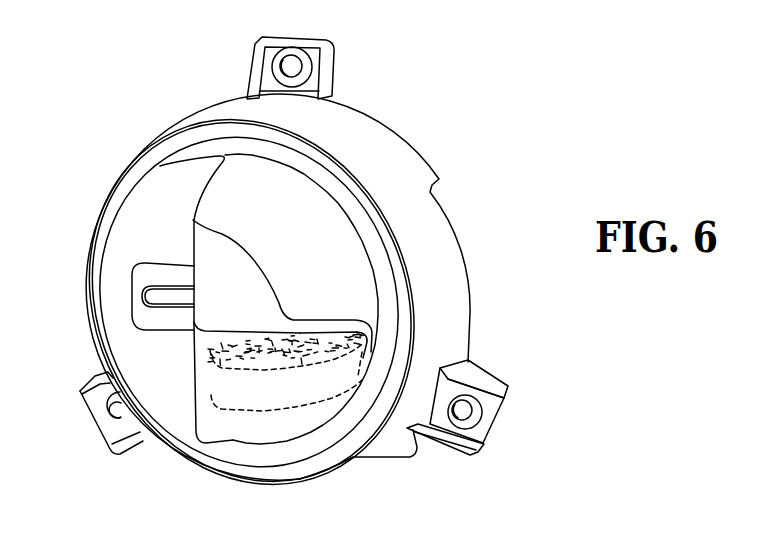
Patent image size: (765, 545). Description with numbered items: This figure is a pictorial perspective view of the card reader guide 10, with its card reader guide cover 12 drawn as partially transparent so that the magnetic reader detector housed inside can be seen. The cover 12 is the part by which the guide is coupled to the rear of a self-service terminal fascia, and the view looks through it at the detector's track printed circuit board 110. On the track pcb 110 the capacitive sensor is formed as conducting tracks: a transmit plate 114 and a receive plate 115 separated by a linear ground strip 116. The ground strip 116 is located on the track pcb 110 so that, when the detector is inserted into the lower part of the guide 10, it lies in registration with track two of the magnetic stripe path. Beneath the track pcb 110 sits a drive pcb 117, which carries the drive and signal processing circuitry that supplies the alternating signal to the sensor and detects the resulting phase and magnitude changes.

The card reader guide 10 is at (560, 91).
The card reader guide cover 12 is at (372, 128).
The track printed circuit board 110 is at (365, 365).
The transmit plate 114 is at (298, 346).
The receive plate 115 is at (227, 338).
The ground strip 116 is at (292, 350).
The drive pcb 117 is at (245, 402).